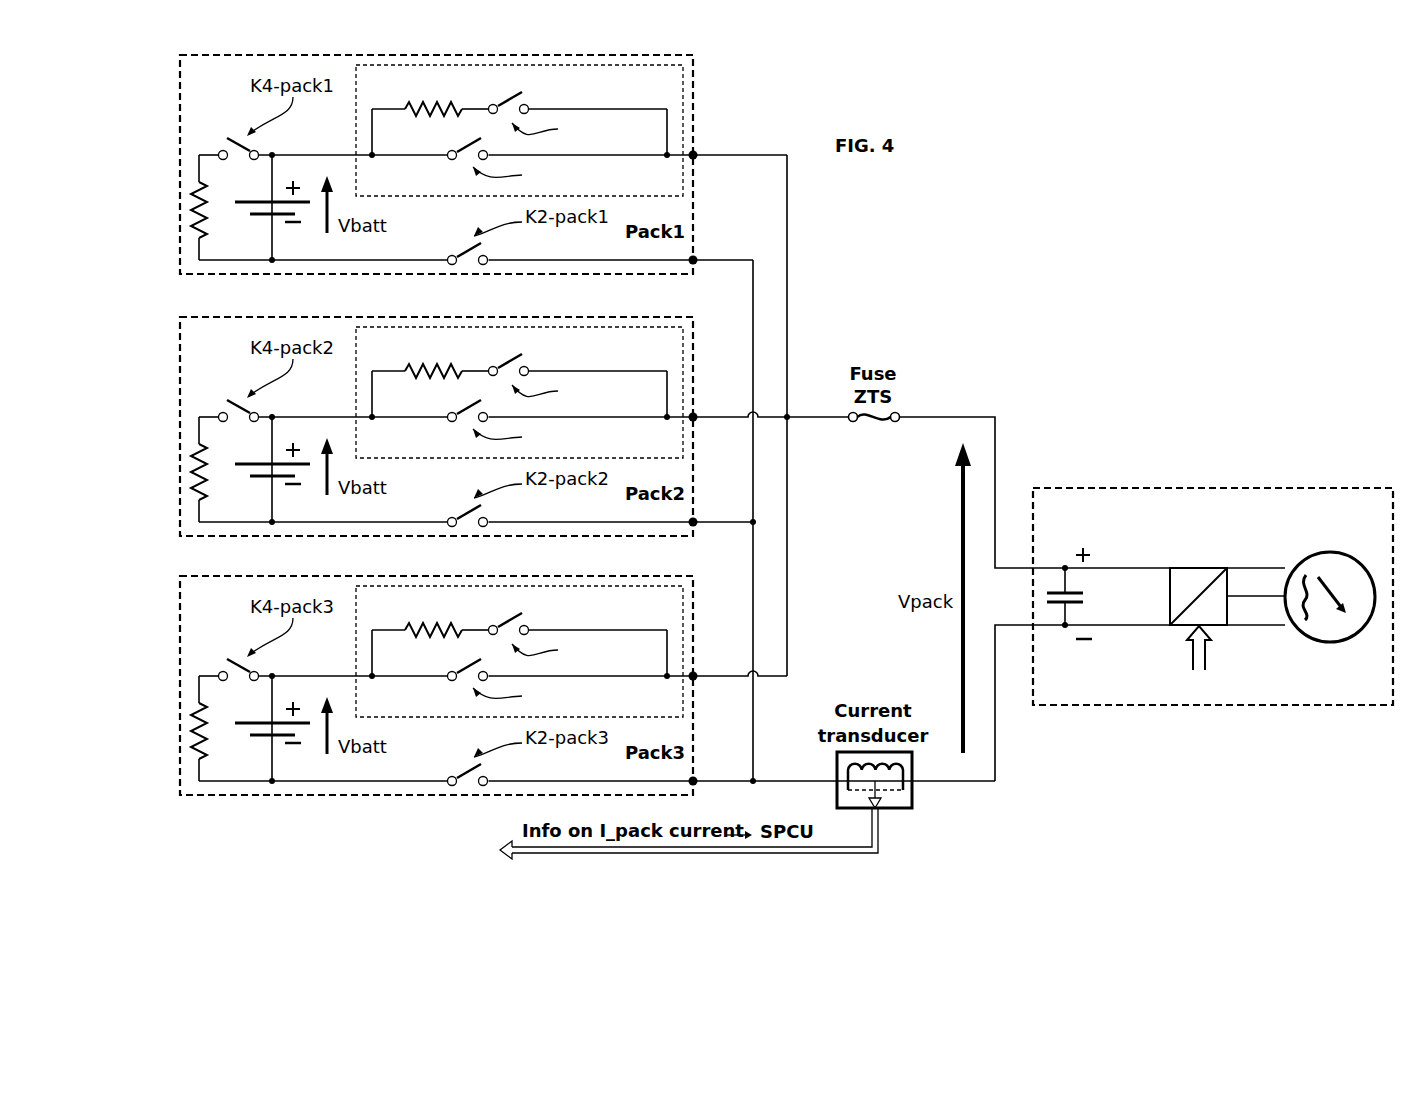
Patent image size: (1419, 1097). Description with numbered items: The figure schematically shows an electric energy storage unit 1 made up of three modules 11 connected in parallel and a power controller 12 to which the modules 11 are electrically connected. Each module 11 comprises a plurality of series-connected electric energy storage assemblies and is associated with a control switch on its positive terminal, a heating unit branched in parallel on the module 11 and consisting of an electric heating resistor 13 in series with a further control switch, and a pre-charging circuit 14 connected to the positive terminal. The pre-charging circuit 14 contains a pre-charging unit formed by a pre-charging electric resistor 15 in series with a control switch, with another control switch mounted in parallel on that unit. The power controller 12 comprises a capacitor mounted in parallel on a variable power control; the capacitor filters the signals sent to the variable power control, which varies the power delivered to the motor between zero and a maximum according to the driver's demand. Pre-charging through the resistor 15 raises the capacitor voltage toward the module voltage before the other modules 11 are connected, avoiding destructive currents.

The electric energy storage unit 1 is at (693, 113).
The module 11 is at (262, 222).
The power controller 12 is at (1232, 488).
The electric heating resistor 13 is at (211, 205).
The pre-charging circuit 14 is at (356, 133).
The pre-charging electric resistor 15 is at (442, 117).